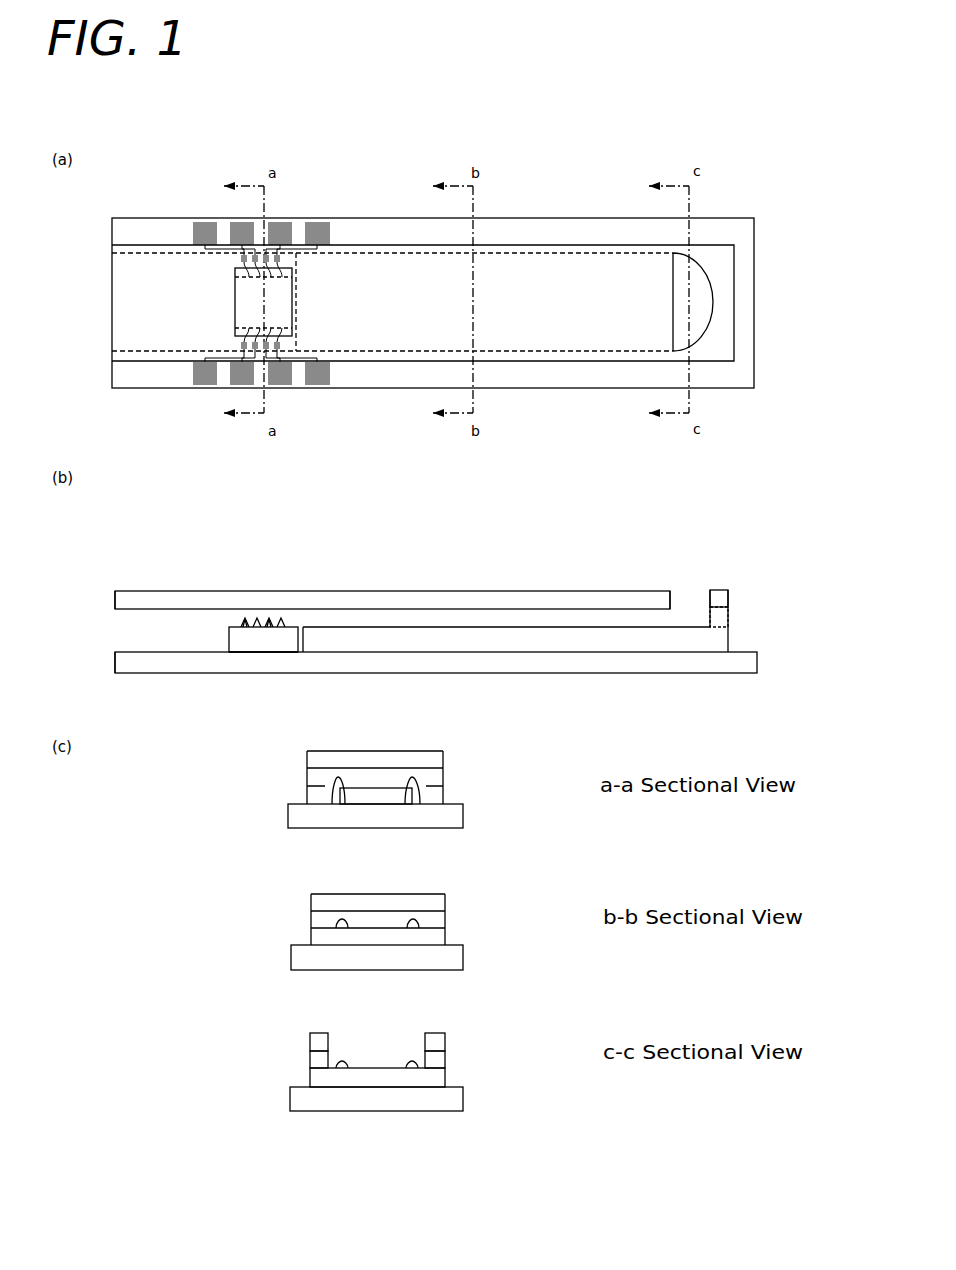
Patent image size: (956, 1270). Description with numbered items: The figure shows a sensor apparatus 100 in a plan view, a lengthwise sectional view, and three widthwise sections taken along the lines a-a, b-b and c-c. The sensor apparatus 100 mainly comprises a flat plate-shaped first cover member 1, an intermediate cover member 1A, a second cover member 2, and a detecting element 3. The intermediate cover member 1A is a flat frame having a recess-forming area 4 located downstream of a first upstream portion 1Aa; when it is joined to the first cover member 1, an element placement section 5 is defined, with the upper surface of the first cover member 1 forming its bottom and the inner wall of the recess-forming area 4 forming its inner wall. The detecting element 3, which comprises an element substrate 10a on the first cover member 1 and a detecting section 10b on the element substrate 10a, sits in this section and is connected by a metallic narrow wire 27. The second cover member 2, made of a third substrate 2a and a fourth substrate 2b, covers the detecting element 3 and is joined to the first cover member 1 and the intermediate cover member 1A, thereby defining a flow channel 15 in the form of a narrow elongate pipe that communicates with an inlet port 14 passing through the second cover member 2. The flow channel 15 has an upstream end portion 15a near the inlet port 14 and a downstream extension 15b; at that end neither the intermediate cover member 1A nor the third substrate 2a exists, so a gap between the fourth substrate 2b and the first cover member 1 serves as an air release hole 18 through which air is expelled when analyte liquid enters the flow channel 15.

The sensor apparatus 100 is at (777, 167).
The first cover member 1 is at (740, 665).
The intermediate cover member 1A is at (395, 938).
The first upstream portion 1Aa is at (720, 640).
The second cover member 2 is at (818, 568).
The third substrate 2a is at (720, 614).
The fourth substrate 2b is at (723, 323).
The detecting element 3 is at (283, 291).
The recess-forming area 4 is at (210, 641).
The element placement section 5 is at (119, 697).
The element substrate 10a is at (251, 640).
The detecting section 10b is at (276, 645).
The inlet port 14 is at (703, 290).
The flow channel 15 is at (500, 284).
The cover end portion 15a is at (583, 620).
The downstream portion (extension) 15b is at (177, 628).
The air release hole 18 is at (123, 628).
The metallic narrow wire 27 is at (283, 640).